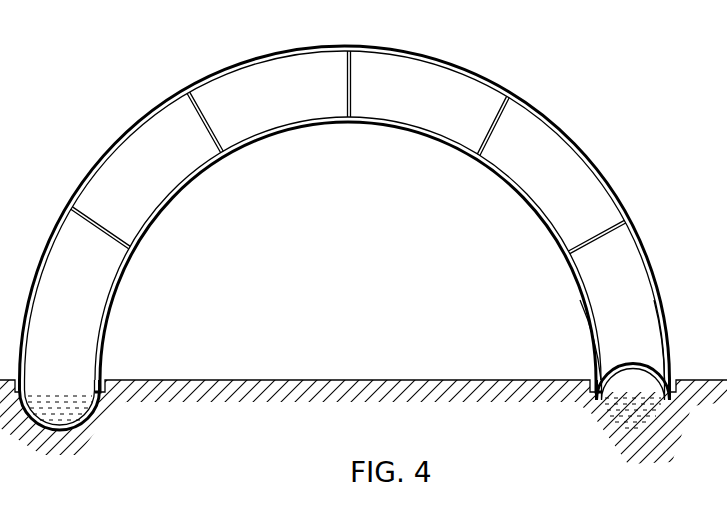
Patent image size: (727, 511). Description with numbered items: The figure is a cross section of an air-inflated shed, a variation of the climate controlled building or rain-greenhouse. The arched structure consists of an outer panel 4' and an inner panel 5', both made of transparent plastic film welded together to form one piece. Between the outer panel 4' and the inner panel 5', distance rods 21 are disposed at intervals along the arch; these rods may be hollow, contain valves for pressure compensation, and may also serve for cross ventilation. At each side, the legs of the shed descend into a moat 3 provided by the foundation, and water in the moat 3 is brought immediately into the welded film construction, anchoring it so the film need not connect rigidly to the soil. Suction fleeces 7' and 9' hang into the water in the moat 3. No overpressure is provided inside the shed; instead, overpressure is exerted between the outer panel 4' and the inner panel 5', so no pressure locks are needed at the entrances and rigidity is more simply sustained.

The distance rods 21 is at (104, 226).
The outer panel 4' is at (355, 213).
The inner panel 5' is at (348, 248).
The suction fleece 9' is at (348, 346).
The suction fleece 7' is at (681, 340).
The moat 3 is at (650, 440).